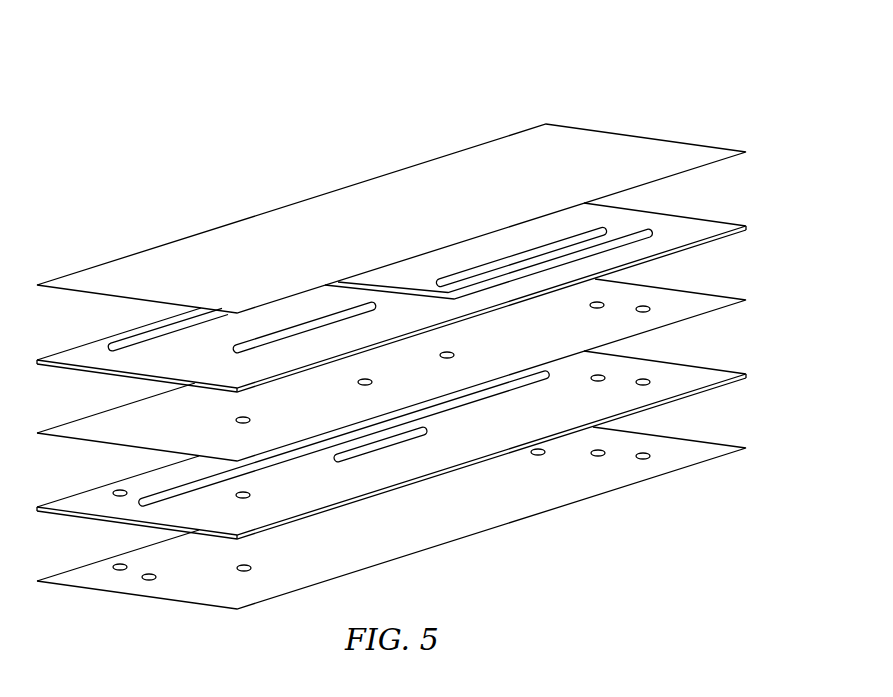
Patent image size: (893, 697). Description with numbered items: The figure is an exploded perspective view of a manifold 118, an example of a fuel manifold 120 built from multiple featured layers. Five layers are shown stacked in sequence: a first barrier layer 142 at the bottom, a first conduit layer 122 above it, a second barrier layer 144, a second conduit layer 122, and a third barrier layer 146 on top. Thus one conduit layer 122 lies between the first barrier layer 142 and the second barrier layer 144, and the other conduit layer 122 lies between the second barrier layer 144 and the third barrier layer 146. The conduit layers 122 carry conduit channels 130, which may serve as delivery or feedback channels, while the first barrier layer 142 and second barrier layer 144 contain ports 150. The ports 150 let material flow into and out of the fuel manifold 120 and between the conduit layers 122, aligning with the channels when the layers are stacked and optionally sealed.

The manifold 118 is at (310, 156).
The fuel manifold 120 is at (642, 77).
The conduit layer 122 is at (714, 226).
The slot 130 is at (648, 232).
The first barrier layer 142 is at (716, 447).
The second barrier layer 144 is at (716, 298).
The third barrier layer 146 is at (712, 152).
The port 150 is at (598, 304).